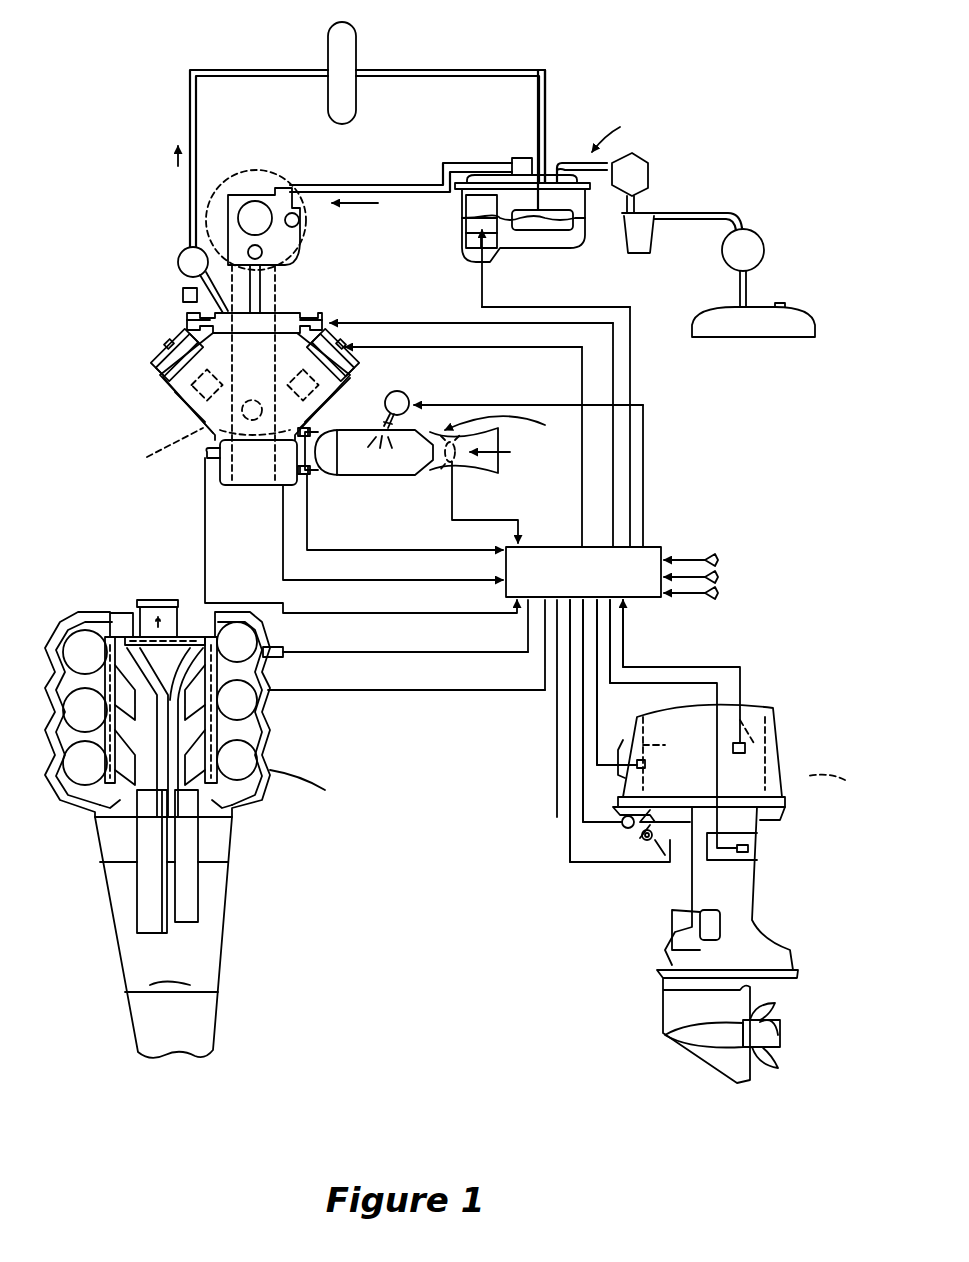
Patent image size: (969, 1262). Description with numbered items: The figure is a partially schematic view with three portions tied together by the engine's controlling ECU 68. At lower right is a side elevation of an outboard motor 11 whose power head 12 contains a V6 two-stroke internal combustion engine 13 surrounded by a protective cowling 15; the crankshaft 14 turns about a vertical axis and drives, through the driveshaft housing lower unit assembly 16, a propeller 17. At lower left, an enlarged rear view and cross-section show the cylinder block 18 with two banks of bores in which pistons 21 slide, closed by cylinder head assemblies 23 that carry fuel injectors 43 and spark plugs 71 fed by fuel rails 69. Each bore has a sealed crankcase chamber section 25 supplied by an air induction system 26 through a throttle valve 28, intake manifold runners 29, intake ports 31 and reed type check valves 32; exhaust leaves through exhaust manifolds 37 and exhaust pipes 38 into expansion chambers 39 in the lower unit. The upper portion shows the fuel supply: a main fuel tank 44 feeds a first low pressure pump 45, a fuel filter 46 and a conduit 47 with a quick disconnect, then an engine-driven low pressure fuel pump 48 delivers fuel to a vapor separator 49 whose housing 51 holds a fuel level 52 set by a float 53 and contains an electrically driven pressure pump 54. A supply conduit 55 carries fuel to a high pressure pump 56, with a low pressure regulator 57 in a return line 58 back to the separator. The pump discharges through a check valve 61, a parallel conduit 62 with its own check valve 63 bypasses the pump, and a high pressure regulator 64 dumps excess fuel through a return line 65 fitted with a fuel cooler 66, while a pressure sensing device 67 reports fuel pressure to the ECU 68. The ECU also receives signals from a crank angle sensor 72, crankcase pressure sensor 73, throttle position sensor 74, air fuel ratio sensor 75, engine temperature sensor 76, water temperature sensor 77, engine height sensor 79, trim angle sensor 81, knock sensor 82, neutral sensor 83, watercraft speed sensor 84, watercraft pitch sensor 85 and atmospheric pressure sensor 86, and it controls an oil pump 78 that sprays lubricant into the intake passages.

The outboard motor 11 is at (775, 698).
The power head 12 is at (795, 748).
The internal combustion engine 13 is at (280, 732).
The crankshaft 14 is at (247, 485).
The protective cowling 15 is at (660, 710).
The driveshaft housing lower unit assembly 16 is at (213, 990).
The propeller 17 is at (760, 1070).
The cylinder block 18 is at (182, 428).
The pistons 21 is at (154, 453).
The cylinder head assemblies 23 is at (190, 408).
The crankcase chamber sections 25 is at (205, 520).
The air induction system 26 is at (496, 444).
The throttle valve 28 is at (420, 460).
The intake manifold runners 29 is at (397, 475).
The intake ports 31 is at (308, 475).
The reed type check valves 32 is at (322, 462).
The exhaust manifolds 37 is at (197, 843).
The exhaust pipes 38 is at (137, 905).
The expansion chambers 39 is at (171, 974).
The fuel injectors 43 is at (192, 333).
The main fuel tank 44 is at (738, 337).
The first low pressure pump 45 is at (753, 240).
The fuel filter 46 is at (640, 250).
The conduit 47 is at (650, 165).
The low pressure fuel pump 48 is at (702, 213).
The vapor separator 49 is at (595, 136).
The vapor separator housing 51 is at (478, 265).
The fuel level 52 is at (545, 248).
The float 53 is at (543, 140).
The electrically driven pressure pump 54 is at (468, 212).
The supply conduit 55 is at (355, 185).
The high pressure pump 56 is at (252, 210).
The low pressure regulator 57 is at (518, 158).
The return line 58 is at (480, 183).
The check valve 61 is at (228, 240).
The parallel conduit 62 is at (295, 245).
The check valve 63 is at (300, 220).
The high pressure regulator 64 is at (178, 262).
The return line 65 is at (262, 70).
The fuel heat exchanger or cooler 66 is at (352, 40).
The pressure sensing device 67 is at (183, 295).
The ECU 68 is at (552, 545).
The fuel rails 69 is at (185, 325).
The spark plugs 71 is at (160, 350).
The crank angle sensor 72 is at (276, 488).
The crankcase pressure sensor 73 is at (207, 452).
The throttle position sensor 74 is at (458, 478).
The air fuel ratio sensor 75 is at (290, 650).
The engine temperature sensor 76 is at (270, 690).
The water temperature sensor 77 is at (748, 748).
The oil pump 78 is at (408, 395).
The engine height sensor 79 is at (625, 830).
The trim angle sensor 81 is at (652, 842).
The knock sensor 82 is at (647, 763).
The neutral sensor 83 is at (752, 850).
The watercraft speed sensor 84 is at (718, 558).
The watercraft pitch sensor 85 is at (718, 577).
The atmospheric pressure sensor 86 is at (718, 593).